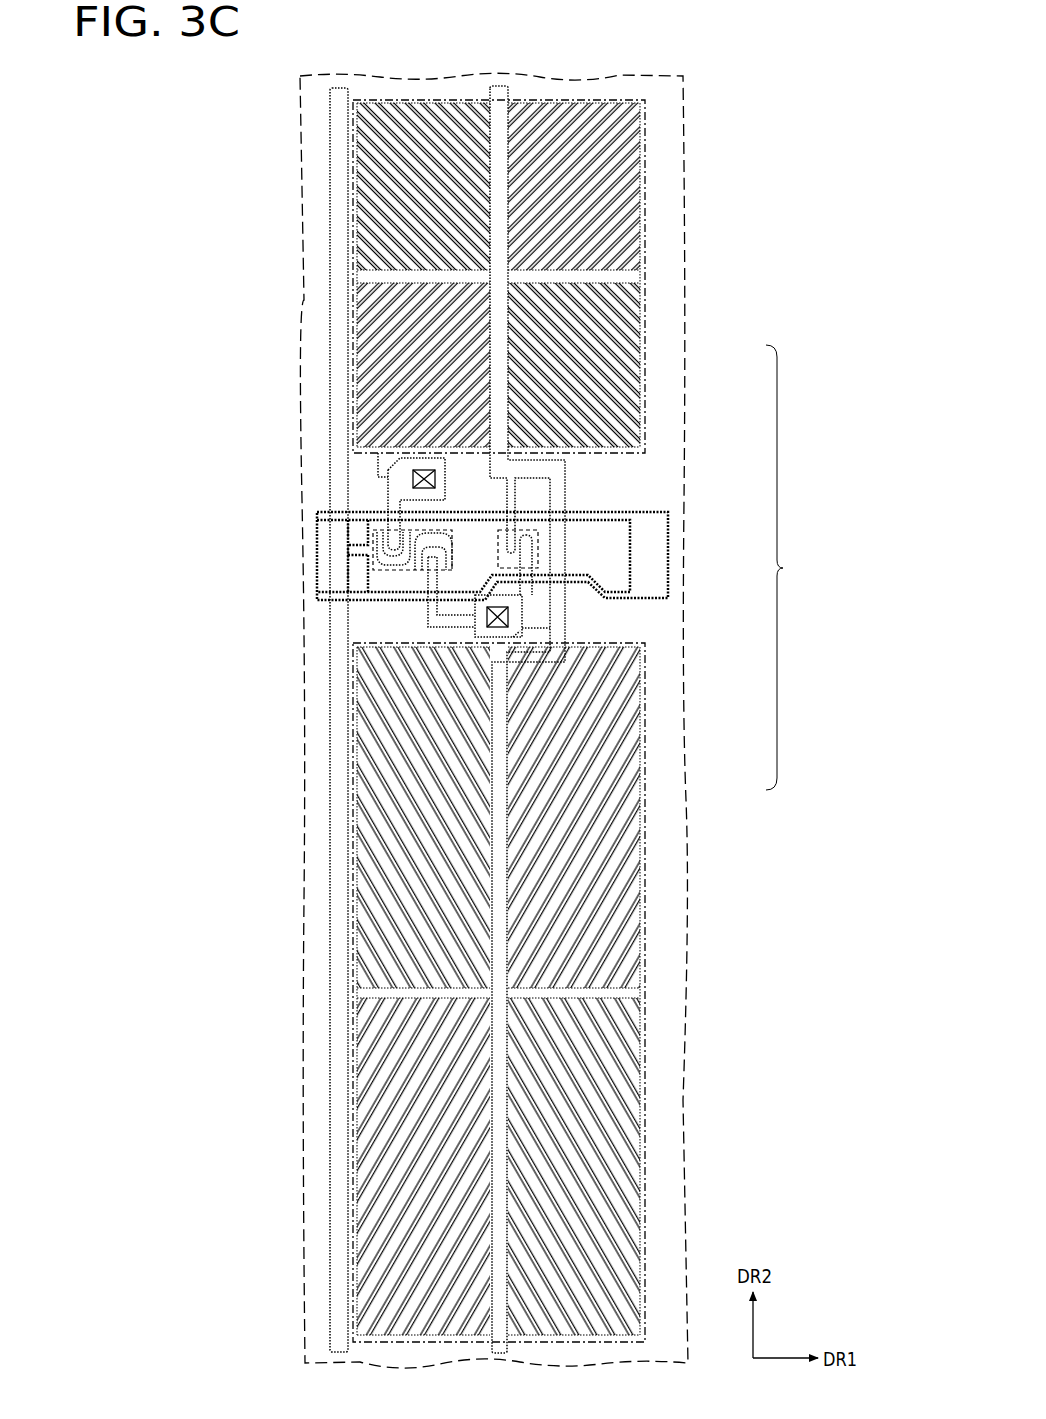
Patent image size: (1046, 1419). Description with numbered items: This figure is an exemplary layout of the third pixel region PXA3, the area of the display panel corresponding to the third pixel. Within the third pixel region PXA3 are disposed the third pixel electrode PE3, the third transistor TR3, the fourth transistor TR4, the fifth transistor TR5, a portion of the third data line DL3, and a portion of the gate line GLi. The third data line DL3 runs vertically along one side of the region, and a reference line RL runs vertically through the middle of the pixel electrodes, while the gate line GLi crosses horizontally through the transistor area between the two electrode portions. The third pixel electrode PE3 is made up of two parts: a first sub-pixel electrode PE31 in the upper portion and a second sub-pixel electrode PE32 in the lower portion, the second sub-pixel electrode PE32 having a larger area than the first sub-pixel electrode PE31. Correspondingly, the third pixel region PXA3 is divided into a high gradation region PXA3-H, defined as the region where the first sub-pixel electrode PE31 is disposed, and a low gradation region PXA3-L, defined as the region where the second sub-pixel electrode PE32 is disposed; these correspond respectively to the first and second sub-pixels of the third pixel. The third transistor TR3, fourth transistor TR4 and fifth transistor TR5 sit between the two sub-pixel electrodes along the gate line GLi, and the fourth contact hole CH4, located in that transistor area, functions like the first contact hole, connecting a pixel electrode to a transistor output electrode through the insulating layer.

The third pixel region PXA3 is at (630, 76).
The third data line DL3 is at (340, 88).
The reference line RL is at (500, 88).
The first sub-pixel electrode PE31 is at (645, 350).
The second sub-pixel electrode PE32 is at (640, 777).
The third pixel electrode PE3 is at (797, 567).
The high gradation region PXA3-H is at (355, 346).
The low gradation region PXA3-L is at (355, 780).
The gate line GLi is at (318, 517).
The third transistor TR3 is at (390, 522).
The fourth transistor TR4 is at (426, 572).
The fifth transistor TR5 is at (538, 553).
The fourth contact hole CH4 is at (475, 610).